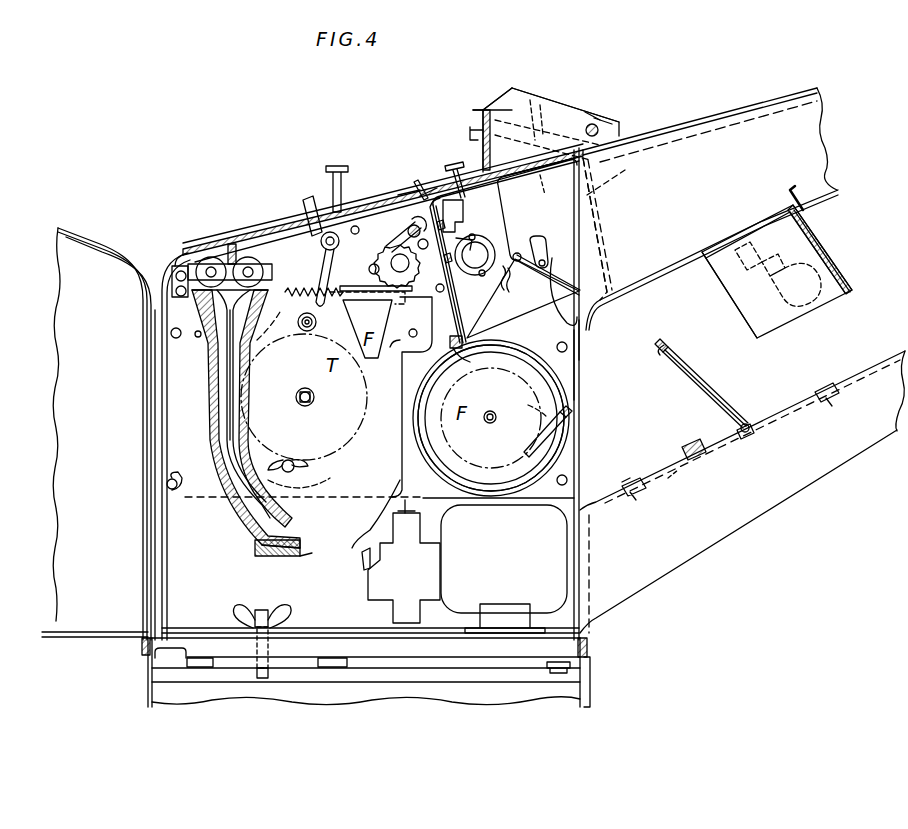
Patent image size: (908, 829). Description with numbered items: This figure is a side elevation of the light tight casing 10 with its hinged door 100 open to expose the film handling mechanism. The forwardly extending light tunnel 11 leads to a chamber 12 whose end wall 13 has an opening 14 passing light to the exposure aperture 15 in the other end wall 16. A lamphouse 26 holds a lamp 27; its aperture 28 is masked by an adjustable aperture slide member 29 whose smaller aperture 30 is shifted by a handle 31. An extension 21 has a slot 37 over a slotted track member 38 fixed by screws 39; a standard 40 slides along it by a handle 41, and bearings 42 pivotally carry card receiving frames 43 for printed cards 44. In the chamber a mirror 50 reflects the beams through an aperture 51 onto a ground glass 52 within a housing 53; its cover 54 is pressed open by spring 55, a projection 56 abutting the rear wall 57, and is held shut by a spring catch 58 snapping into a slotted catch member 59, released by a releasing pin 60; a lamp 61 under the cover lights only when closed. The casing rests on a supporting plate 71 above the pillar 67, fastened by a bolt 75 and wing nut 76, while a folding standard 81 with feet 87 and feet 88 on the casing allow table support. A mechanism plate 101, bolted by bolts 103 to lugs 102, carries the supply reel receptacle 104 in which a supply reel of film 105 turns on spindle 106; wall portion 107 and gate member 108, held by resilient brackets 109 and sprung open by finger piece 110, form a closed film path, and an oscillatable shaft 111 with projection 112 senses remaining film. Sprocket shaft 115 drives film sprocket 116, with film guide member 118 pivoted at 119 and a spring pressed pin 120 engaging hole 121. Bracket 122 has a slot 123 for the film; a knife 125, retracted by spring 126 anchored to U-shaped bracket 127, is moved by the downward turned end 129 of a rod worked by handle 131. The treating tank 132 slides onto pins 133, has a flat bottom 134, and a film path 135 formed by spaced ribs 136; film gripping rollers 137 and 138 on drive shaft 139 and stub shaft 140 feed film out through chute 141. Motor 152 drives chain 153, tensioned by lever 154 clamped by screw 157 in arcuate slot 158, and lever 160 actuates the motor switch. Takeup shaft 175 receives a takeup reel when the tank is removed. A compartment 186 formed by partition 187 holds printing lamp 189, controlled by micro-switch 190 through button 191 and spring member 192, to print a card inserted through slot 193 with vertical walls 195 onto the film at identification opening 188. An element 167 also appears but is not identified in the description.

The light tight casing 10 is at (156, 396).
The light tunnel 11 is at (718, 125).
The chamber 12 is at (583, 332).
The end wall 13 is at (616, 180).
The opening 14 is at (602, 256).
The exposure aperture 15 is at (466, 336).
The end wall 16 is at (455, 302).
The extension 21 is at (740, 520).
The lamphouse 26 is at (764, 222).
The lamp 27 is at (745, 322).
The aperture 28 is at (848, 280).
The adjustable aperture slide member 29 is at (822, 236).
The aperture 30 is at (838, 256).
The handle 31 is at (792, 190).
The slot 37 is at (778, 412).
The slotted track member 38 is at (680, 478).
The screws 39 is at (624, 490).
The standard 40 is at (737, 430).
The handle 41 is at (684, 448).
The spaced bearings 42 is at (746, 422).
The card receiving frames 43 is at (700, 385).
The printed cards 44 is at (672, 356).
The mirror 50 is at (555, 260).
The aperture 51 is at (542, 190).
The ground glass 52 is at (540, 182).
The housing 53 is at (476, 116).
The cover 54 is at (505, 100).
The spring 55 is at (598, 120).
The projection 56 is at (610, 122).
The rear wall 57 is at (600, 134).
The spring catch 58 is at (551, 130).
The slotted catch member 59 is at (470, 110).
The releasing pin 60 is at (470, 133).
The lamp 61 is at (540, 100).
The pillar 67 is at (147, 690).
The supporting plate 71 is at (545, 690).
The bolt 75 is at (262, 610).
The wing nut 76 is at (238, 616).
The standard 81 is at (582, 648).
The feet 87 is at (575, 668).
The feet 88 is at (160, 655).
The hinged door 100 is at (62, 316).
The mechanism plate 101 is at (198, 490).
The lugs 102 is at (170, 490).
The bolts 103 is at (167, 482).
The supply reel receptacle 104 is at (565, 460).
The supply reel of film 105 is at (568, 403).
The spindle 106 is at (494, 422).
The wall portion 107 is at (582, 356).
The gate member 108 is at (413, 338).
The resilient brackets 109 is at (436, 289).
The finger piece 110 is at (432, 322).
The oscillatable shaft 111 is at (568, 414).
The projection 112 is at (540, 410).
The sprocket shaft 115 is at (390, 260).
The film sprocket 116 is at (395, 246).
The film guide member 118 is at (420, 238).
The pivot 119 is at (416, 219).
The spring pressed pin 120 is at (368, 271).
The hole 121 is at (356, 225).
The bracket 122 is at (360, 312).
The slot 123 is at (380, 306).
The knife 125 is at (316, 315).
The spring 126 is at (290, 293).
The U-shaped bracket 127 is at (172, 288).
The downward turned end 129 is at (326, 270).
The handle 131 is at (312, 200).
The treating tank 132 is at (258, 538).
The pins 133 is at (188, 345).
The flat bottom 134 is at (312, 556).
The film path 135 is at (235, 430).
The spaced ribs 136 is at (272, 556).
The film gripping roller 137 is at (207, 258).
The film gripping roller 138 is at (250, 256).
The drive shaft 139 is at (205, 258).
The stub shaft 140 is at (275, 326).
The chute 141 is at (231, 244).
The motor 152 is at (504, 569).
The chain 153 is at (366, 558).
The lever 154 is at (304, 492).
The screw 157 is at (288, 460).
The arcuate slot 158 is at (310, 455).
The lever 160 is at (334, 177).
The rod 167 is at (550, 262).
The takeup shaft 175 is at (305, 388).
The compartment 186 is at (520, 264).
The partition 187 is at (522, 250).
The identification opening 188 is at (488, 290).
The printing lamp 189 is at (524, 291).
The micro-switch 190 is at (480, 245).
The button 191 is at (464, 170).
The spring member 192 is at (470, 206).
The slot 193 is at (424, 180).
The vertical walls 195 is at (402, 181).